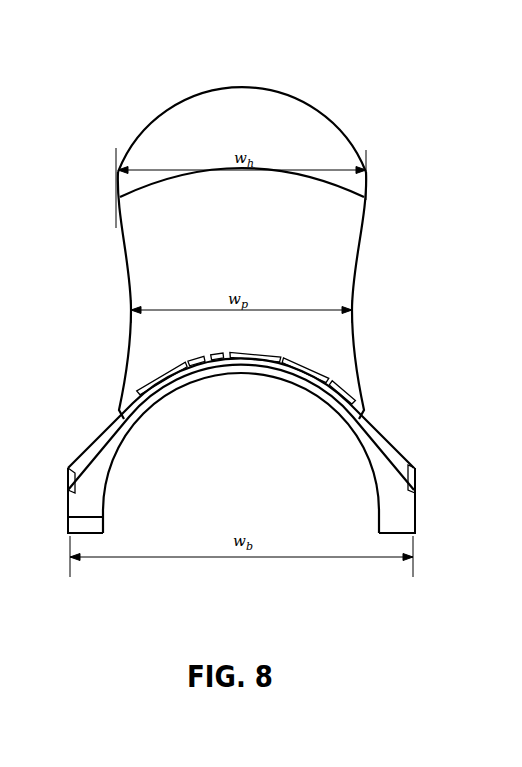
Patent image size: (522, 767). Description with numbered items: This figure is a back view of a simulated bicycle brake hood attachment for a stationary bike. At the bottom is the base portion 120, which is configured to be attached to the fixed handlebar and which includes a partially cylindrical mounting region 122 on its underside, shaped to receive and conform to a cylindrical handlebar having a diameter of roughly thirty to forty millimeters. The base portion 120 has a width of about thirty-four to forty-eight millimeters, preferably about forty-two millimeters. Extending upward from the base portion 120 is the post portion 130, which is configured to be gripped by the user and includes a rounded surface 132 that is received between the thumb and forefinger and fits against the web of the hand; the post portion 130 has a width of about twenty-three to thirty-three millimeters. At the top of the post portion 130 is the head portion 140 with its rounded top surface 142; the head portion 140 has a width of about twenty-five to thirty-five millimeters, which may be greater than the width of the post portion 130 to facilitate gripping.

The base portion 120 is at (213, 442).
The partially cylindrical mounting region 122 is at (234, 374).
The post portion 130 is at (216, 212).
The rounded surface 132 is at (242, 212).
The head portion 140 is at (215, 101).
The rounded top surface 142 is at (253, 86).